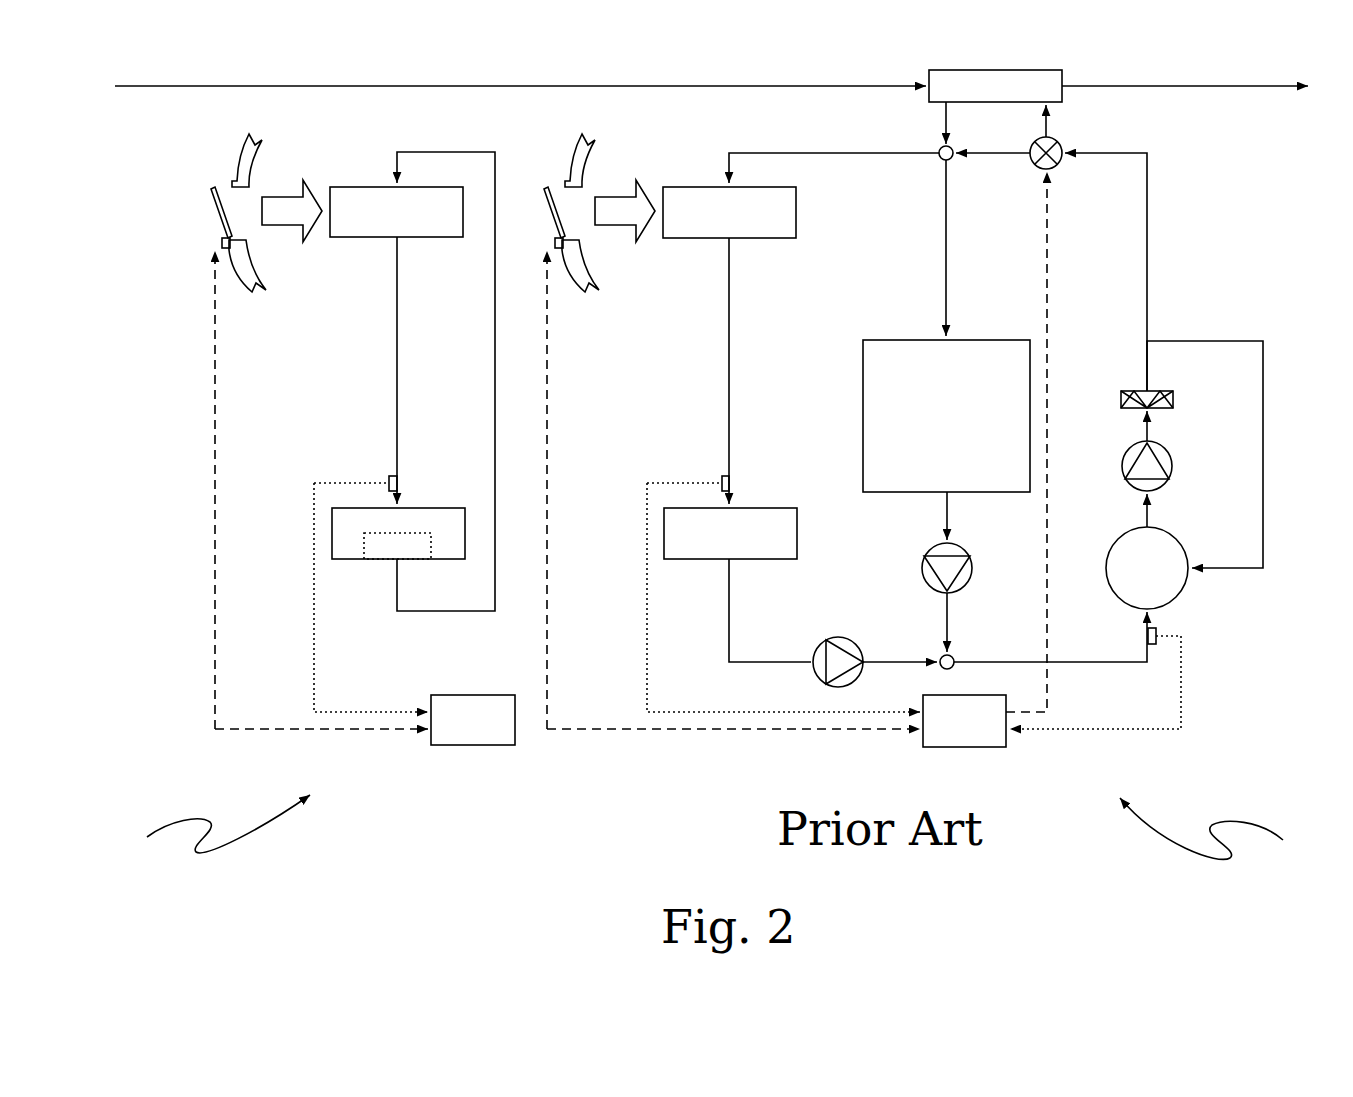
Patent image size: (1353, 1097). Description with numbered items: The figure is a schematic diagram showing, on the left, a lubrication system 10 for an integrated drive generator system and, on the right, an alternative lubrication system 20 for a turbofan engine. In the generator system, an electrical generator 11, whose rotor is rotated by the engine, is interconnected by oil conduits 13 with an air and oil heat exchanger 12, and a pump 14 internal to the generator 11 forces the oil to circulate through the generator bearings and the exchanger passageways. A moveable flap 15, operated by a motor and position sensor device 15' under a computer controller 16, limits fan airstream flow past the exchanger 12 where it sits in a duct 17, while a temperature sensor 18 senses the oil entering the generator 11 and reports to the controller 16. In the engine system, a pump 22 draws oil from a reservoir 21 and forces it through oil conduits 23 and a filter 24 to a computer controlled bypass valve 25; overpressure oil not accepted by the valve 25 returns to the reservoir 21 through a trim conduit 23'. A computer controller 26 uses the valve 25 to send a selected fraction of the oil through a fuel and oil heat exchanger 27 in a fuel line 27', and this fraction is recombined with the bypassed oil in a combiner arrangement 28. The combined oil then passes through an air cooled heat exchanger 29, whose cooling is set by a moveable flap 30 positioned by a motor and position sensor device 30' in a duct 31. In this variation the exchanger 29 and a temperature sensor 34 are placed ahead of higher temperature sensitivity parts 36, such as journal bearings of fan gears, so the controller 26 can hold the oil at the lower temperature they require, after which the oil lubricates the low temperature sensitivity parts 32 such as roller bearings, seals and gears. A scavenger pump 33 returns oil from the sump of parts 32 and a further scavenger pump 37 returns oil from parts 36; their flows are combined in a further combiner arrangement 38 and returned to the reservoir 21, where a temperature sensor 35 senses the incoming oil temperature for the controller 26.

The lubrication system 10 is at (211, 824).
The electrical generator 11 is at (430, 508).
The air and oil heat exchanger 12 is at (430, 240).
The oil conduits 13 is at (395, 336).
The pump 14 is at (380, 560).
The moveable flap 15 is at (193, 212).
The motor and associated position sensor device 15' is at (291, 475).
The computer controller 16 is at (500, 695).
The duct 17 is at (250, 162).
The temperature sensor 18 is at (389, 481).
The lubrication system 20 is at (1220, 828).
The oil reservoir 21 is at (1180, 600).
The pump 22 is at (1166, 484).
The oil conduits 23 is at (980, 382).
The trim conduit 23' is at (1206, 437).
The filter 24 is at (1166, 393).
The bypass valve 25 is at (1060, 140).
The computer controller 26 is at (975, 695).
The fuel and oil heat exchanger 27 is at (588, 91).
The fuel line 27' is at (1017, 71).
The combiner arrangement 28 is at (940, 148).
The air cooled heat exchanger 29 is at (797, 203).
The moveable flap 30 is at (531, 212).
The motor and associated position sensor device 30' is at (709, 479).
The duct 31 is at (580, 162).
The low temperature sensitivity parts 32 is at (862, 441).
The scavenger pump 33 is at (971, 563).
The temperature sensor 34 is at (720, 481).
The temperature sensor 35 is at (1152, 645).
The higher temperature sensitivity parts 36 is at (780, 508).
The scavenger pump 37 is at (834, 638).
The combiner arrangement 38 is at (955, 660).